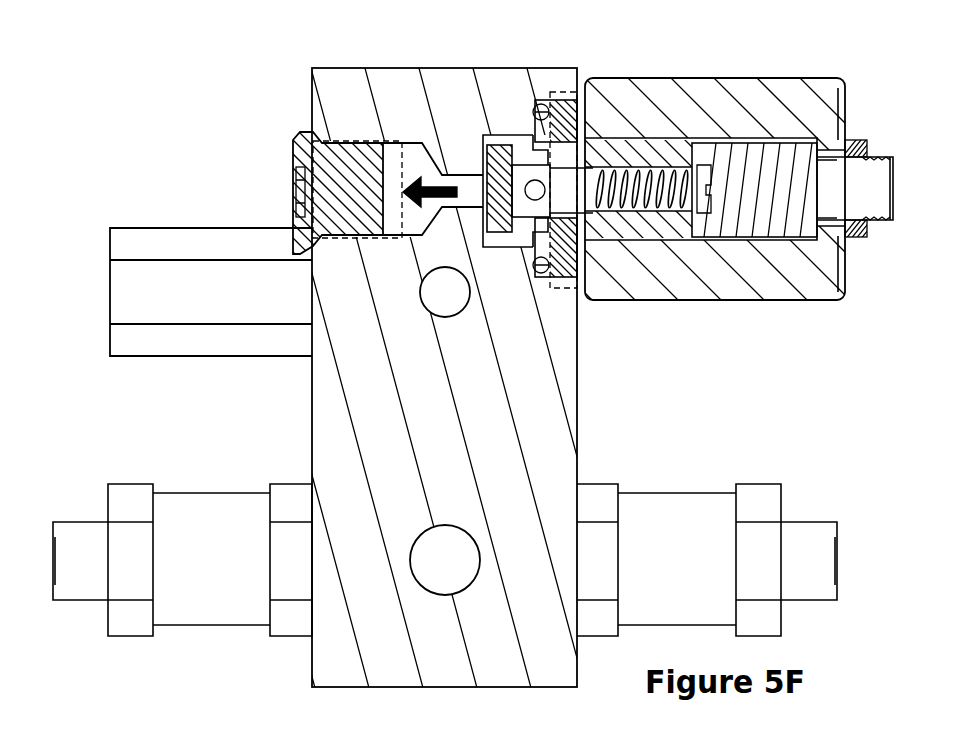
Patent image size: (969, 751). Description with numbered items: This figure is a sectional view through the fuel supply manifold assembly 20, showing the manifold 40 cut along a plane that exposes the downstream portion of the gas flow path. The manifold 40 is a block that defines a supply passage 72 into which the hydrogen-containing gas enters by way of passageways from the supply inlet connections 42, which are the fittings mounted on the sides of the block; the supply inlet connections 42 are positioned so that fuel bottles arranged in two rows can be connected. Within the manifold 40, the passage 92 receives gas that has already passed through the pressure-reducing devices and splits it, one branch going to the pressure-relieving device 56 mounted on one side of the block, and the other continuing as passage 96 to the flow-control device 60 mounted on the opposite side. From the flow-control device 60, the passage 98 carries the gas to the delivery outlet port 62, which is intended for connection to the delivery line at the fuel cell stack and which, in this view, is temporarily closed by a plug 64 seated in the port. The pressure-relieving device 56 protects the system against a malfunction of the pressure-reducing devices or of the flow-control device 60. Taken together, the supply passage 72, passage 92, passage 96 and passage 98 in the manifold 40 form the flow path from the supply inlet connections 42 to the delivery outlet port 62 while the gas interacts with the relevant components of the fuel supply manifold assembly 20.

The fuel supply manifold assembly 20 is at (655, 388).
The manifold 40 is at (516, 86).
The supply inlet connections 42 is at (208, 522).
The pressure-relieving device 56 is at (158, 240).
The flow-control device 60 is at (807, 103).
The delivery outlet port 62 is at (317, 130).
The plug 64 is at (300, 153).
The supply passage 72 is at (452, 576).
The passage 92 is at (452, 302).
The passage 96 is at (528, 198).
The passage 98 is at (412, 160).